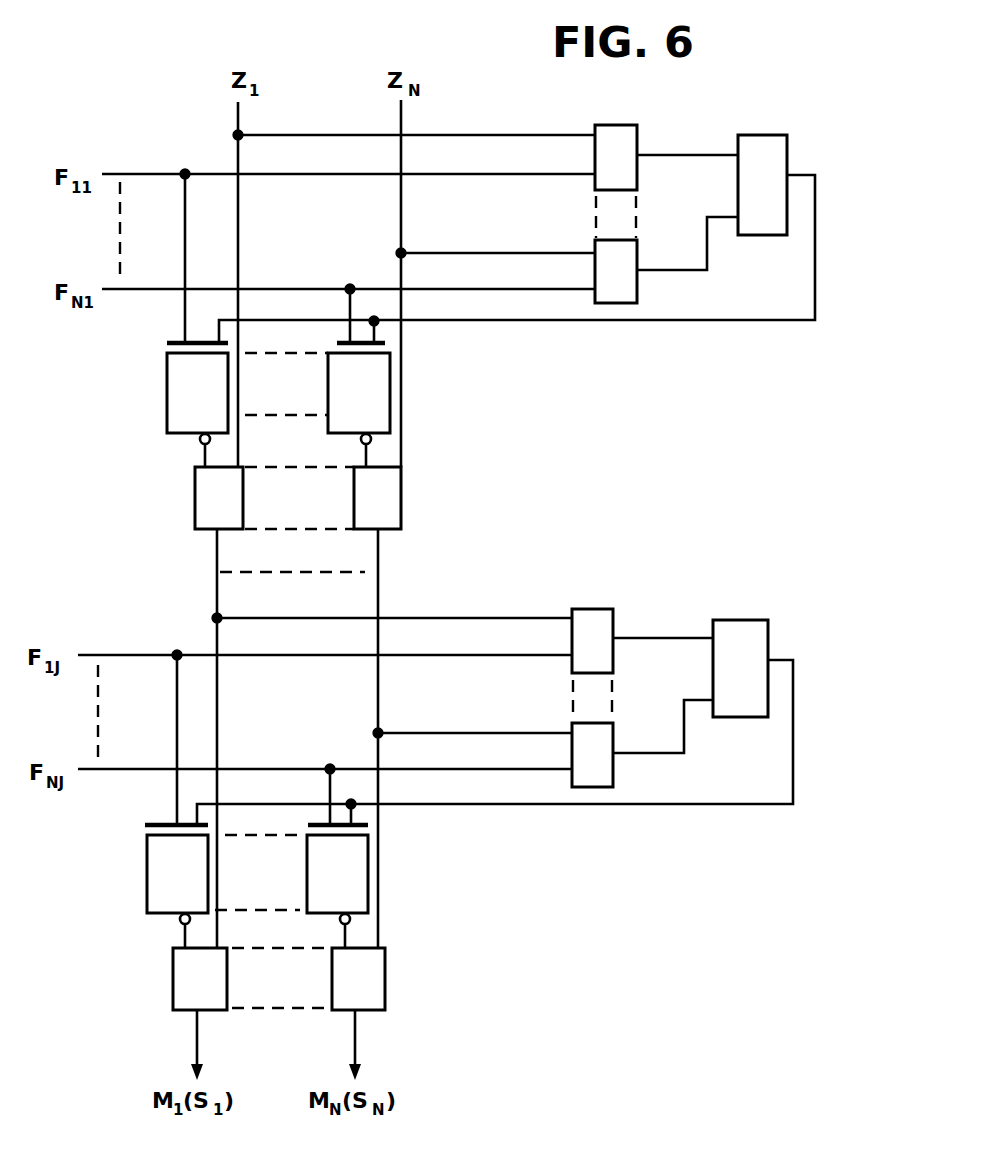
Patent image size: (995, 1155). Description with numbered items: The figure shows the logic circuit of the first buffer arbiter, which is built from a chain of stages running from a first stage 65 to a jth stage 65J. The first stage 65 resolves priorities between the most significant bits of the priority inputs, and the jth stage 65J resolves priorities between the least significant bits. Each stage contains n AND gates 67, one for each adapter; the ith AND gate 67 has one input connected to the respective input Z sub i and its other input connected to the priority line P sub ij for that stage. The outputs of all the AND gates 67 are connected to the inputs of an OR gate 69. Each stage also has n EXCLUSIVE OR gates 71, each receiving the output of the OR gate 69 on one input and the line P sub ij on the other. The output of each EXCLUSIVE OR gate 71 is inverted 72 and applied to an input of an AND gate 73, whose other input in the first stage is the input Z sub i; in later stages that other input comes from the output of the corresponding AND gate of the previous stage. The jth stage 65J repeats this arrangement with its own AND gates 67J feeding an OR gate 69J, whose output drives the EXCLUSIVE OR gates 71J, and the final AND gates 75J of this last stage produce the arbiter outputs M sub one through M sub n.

The stage 65 is at (725, 435).
The AND gate 67 is at (637, 128).
The OR gate 69 is at (787, 134).
The EXCLUSIVE OR gate 71 is at (167, 370).
The inverter 72 is at (201, 443).
The AND gate 73 is at (401, 476).
The jth stage 65J is at (698, 885).
The AND gate 67J is at (613, 615).
The OR gate 69J is at (768, 621).
The EXCLUSIVE OR gate 71J is at (313, 836).
The AND gate 75J is at (385, 963).